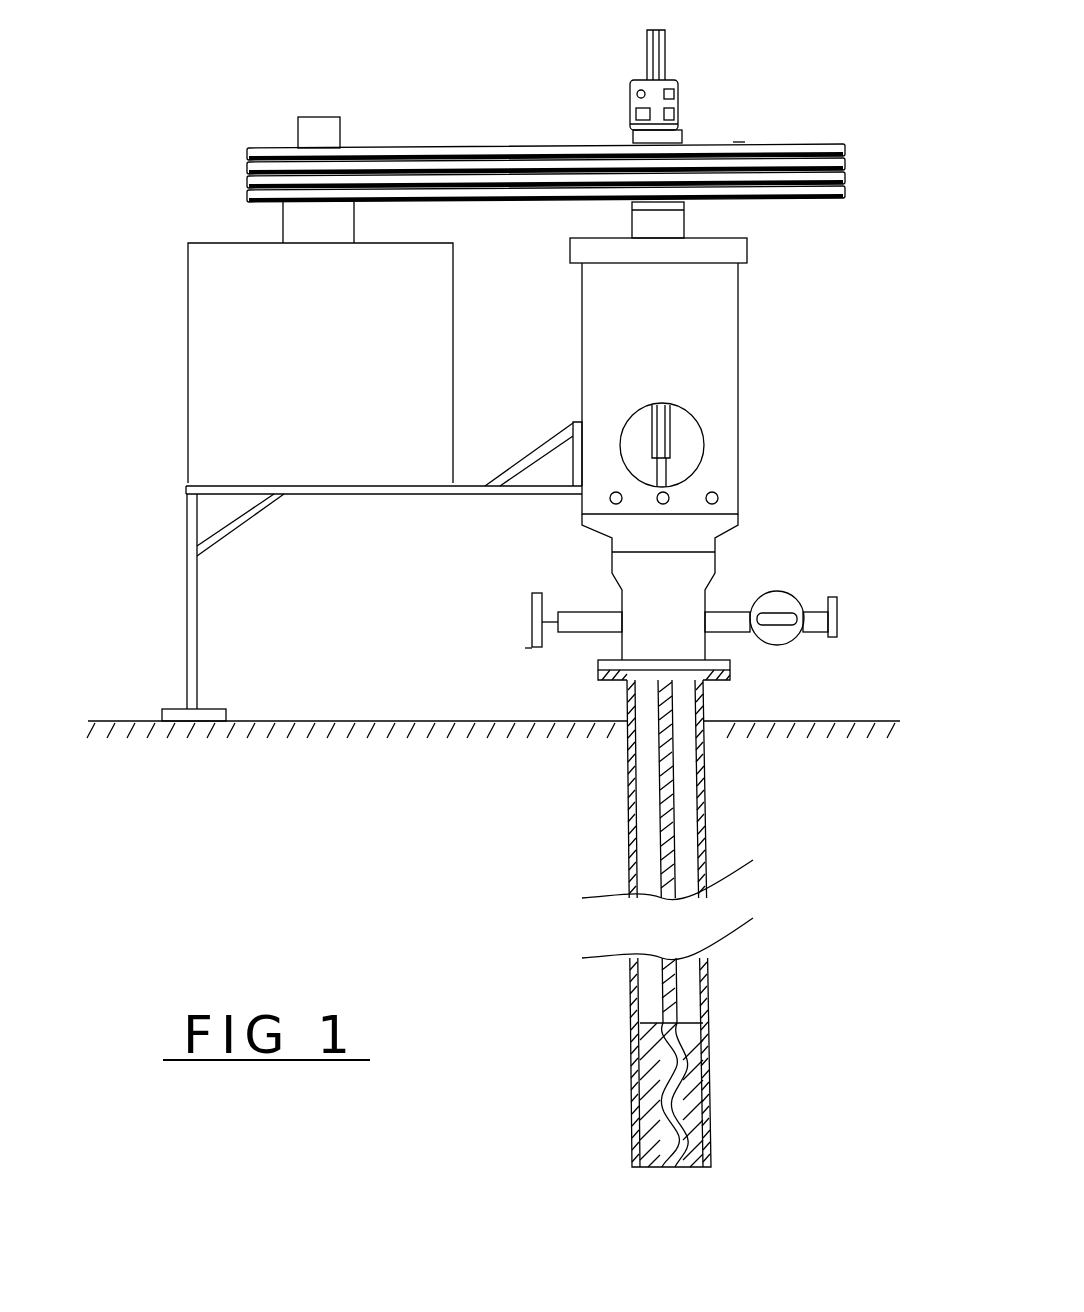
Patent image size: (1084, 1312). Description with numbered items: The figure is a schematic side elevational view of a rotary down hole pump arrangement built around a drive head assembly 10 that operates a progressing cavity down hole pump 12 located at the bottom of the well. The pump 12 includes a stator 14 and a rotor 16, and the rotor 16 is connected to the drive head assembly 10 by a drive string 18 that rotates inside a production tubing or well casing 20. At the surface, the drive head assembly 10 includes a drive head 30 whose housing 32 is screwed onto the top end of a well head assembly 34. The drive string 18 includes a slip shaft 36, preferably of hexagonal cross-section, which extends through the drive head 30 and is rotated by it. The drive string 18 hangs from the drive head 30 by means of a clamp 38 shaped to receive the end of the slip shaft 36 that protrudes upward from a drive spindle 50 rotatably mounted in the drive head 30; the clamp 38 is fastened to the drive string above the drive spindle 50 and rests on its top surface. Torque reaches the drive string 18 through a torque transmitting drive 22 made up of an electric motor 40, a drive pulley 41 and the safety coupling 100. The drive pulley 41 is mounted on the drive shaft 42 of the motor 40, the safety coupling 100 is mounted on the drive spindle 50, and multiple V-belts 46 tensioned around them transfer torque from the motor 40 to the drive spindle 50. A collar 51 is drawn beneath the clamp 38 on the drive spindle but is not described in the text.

The drive head assembly 10 is at (715, 440).
The progressing cavity down hole pump 12 is at (717, 1042).
The stator 14 is at (685, 1080).
The rotor 16 is at (600, 1095).
The drive string 18 is at (742, 851).
The well casing 20 is at (612, 923).
The torque transmitting drive 22 is at (546, 144).
The drive head 30 is at (741, 306).
The housing 32 is at (744, 564).
The well head assembly 34 is at (703, 612).
The slip shaft 36 is at (725, 445).
The clamp 38 is at (724, 68).
The electric motor 40 is at (270, 363).
The drive pulley 41 is at (240, 114).
The drive shaft 42 is at (245, 223).
The V-belts 46 is at (546, 129).
The drive spindle 50 is at (734, 219).
The collar 51 is at (709, 104).
The safety coupling 100 is at (738, 136).